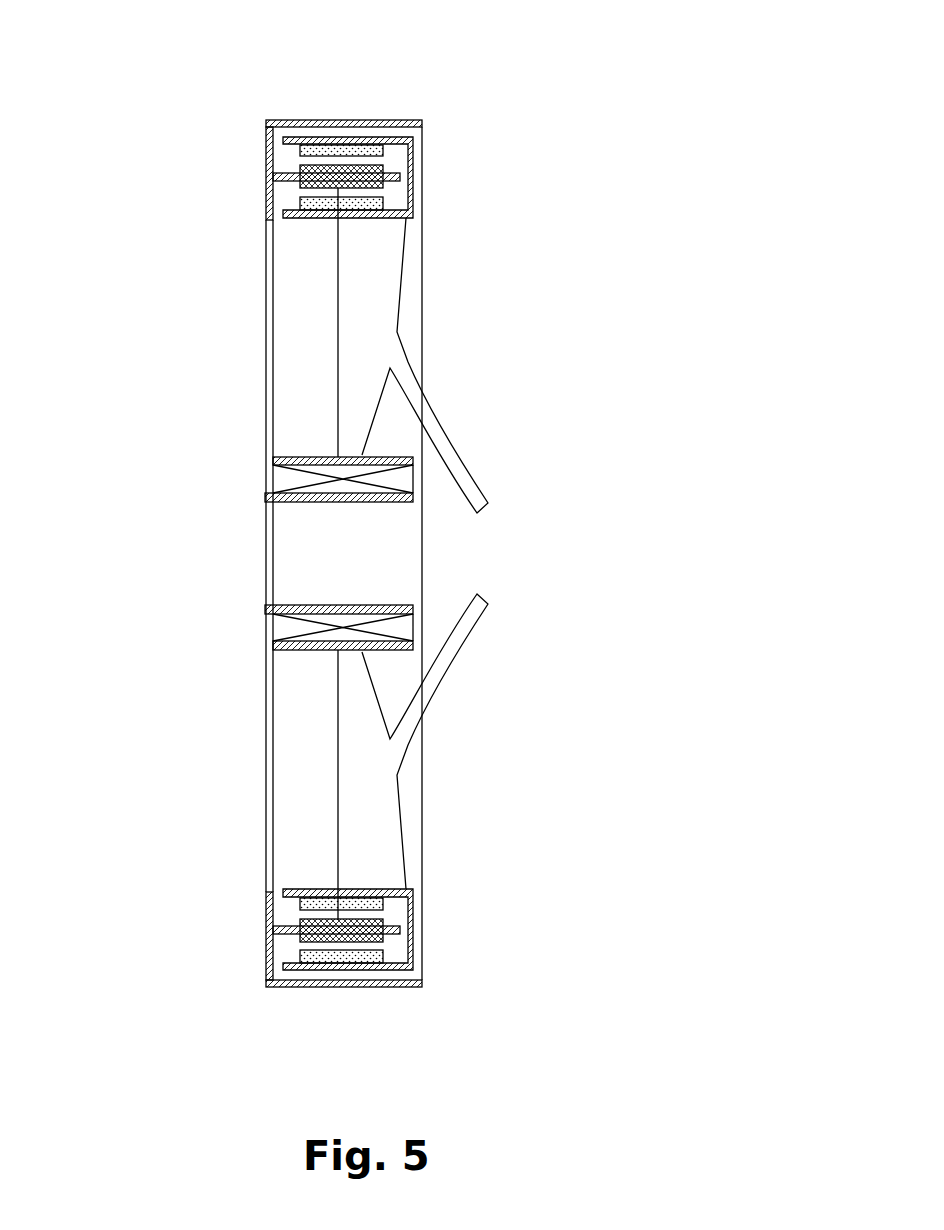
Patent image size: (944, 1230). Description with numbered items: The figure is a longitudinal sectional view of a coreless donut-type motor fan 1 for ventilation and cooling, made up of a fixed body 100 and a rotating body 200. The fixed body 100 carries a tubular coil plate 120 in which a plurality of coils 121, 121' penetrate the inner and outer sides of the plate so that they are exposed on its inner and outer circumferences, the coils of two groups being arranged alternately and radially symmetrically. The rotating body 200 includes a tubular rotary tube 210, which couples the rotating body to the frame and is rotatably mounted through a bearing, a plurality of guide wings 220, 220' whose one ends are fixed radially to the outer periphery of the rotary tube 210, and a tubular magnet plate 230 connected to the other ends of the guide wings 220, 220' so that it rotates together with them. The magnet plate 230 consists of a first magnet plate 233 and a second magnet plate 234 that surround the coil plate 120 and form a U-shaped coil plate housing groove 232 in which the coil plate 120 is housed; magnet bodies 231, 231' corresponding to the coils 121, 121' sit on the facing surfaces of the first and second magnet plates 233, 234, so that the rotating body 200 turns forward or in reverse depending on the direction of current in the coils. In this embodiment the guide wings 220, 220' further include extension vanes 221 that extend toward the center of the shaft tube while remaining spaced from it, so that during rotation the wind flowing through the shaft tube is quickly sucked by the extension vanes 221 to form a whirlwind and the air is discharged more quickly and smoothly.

The coreless donut-type motor fan 1 is at (58, 39).
The fixed body 100 is at (238, 184).
The coil plate 120 is at (290, 173).
The coil 121 is at (356, 104).
The coil 121' is at (341, 1006).
The rotating body 200 is at (512, 290).
The rotary tube 210 is at (300, 650).
The guide wing 220 is at (291, 445).
The guide wing 220' is at (459, 741).
The extension vane 221 is at (465, 470).
The magnet plate 230 is at (578, 105).
The magnet body 231 is at (421, 973).
The magnet body 231' is at (428, 915).
The coil plate housing groove 232 is at (397, 162).
The first magnet plate 233 is at (393, 140).
The second magnet plate 234 is at (380, 218).